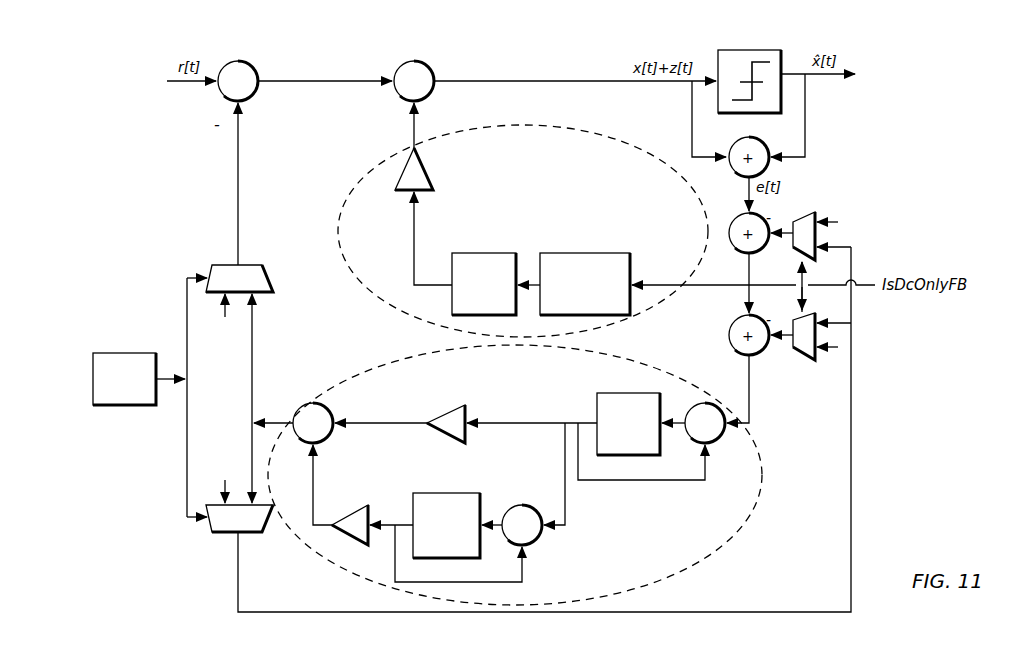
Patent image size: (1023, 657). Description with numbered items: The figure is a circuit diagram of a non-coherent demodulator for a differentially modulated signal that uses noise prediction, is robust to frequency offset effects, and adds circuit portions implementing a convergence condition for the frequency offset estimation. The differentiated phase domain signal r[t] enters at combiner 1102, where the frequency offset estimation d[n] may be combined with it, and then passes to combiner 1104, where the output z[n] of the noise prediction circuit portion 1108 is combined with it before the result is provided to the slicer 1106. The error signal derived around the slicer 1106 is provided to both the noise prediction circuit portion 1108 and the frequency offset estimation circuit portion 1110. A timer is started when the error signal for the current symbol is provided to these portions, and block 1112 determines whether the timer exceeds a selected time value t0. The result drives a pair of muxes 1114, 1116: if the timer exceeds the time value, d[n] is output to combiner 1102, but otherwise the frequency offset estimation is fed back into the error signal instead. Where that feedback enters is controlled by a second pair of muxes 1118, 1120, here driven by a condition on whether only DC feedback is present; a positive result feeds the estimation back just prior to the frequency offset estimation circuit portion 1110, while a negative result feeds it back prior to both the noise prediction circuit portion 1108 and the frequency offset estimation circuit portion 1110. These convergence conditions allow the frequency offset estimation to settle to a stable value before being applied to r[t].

The combiner 1102 is at (238, 61).
The combiner 1104 is at (414, 61).
The slicer 1106 is at (750, 50).
The noise prediction circuit portion 1108 is at (597, 135).
The frequency offset estimation circuit portion 1110 is at (706, 553).
The timer comparison 1112 is at (123, 353).
The mux 1114 is at (225, 265).
The mux 1116 is at (225, 535).
The mux 1118 is at (803, 212).
The mux 1120 is at (808, 360).